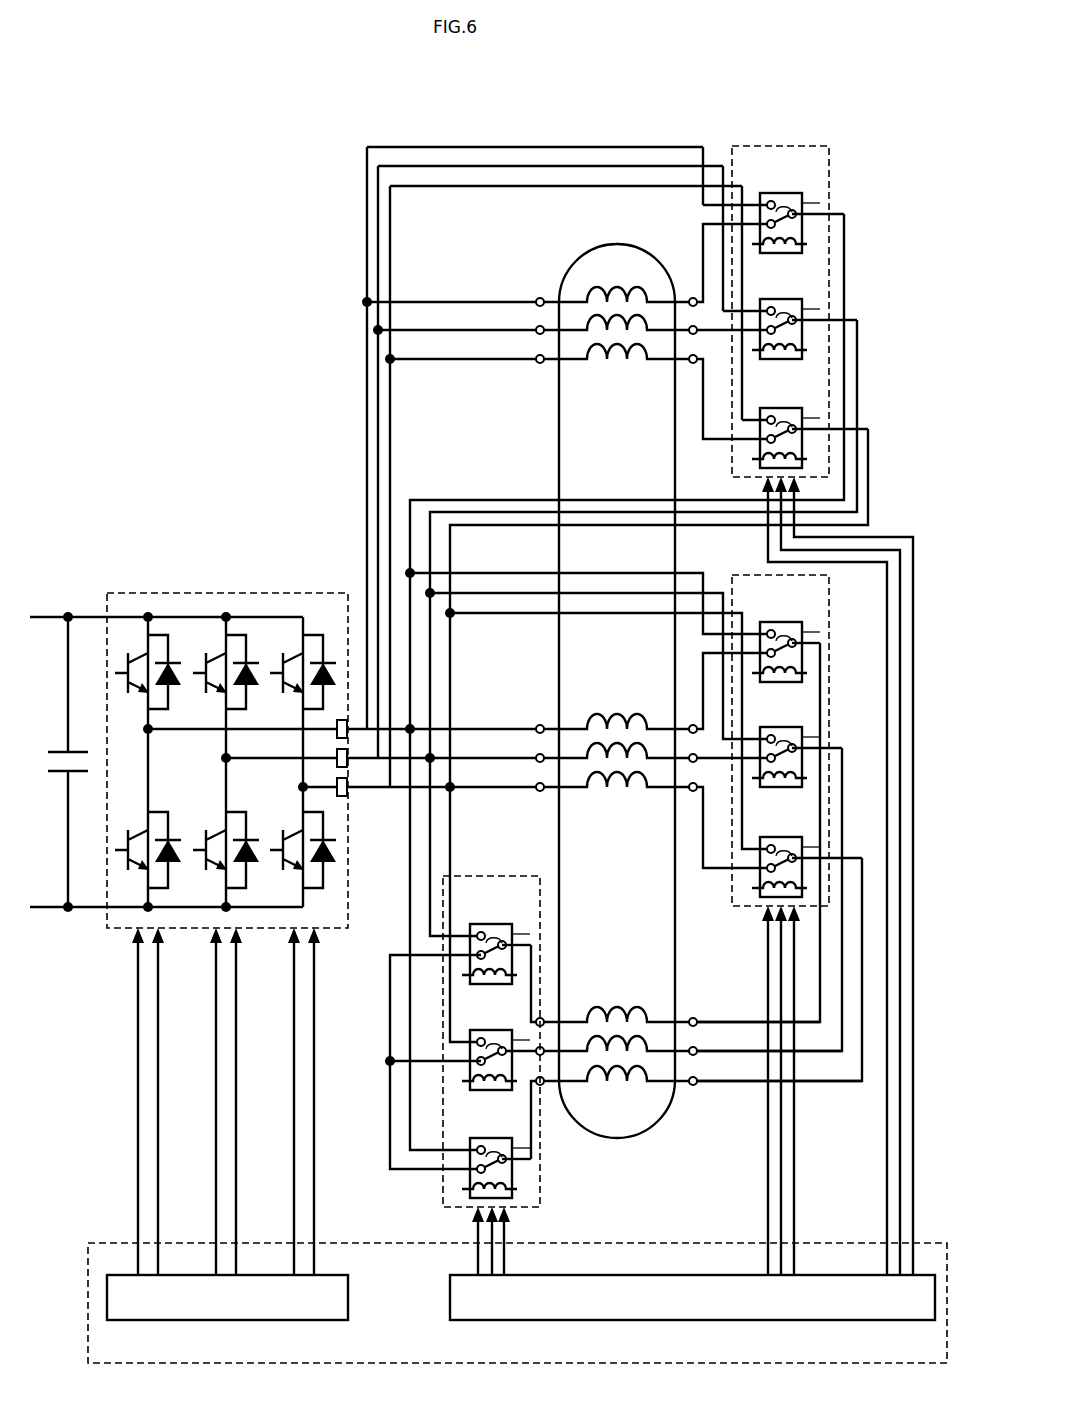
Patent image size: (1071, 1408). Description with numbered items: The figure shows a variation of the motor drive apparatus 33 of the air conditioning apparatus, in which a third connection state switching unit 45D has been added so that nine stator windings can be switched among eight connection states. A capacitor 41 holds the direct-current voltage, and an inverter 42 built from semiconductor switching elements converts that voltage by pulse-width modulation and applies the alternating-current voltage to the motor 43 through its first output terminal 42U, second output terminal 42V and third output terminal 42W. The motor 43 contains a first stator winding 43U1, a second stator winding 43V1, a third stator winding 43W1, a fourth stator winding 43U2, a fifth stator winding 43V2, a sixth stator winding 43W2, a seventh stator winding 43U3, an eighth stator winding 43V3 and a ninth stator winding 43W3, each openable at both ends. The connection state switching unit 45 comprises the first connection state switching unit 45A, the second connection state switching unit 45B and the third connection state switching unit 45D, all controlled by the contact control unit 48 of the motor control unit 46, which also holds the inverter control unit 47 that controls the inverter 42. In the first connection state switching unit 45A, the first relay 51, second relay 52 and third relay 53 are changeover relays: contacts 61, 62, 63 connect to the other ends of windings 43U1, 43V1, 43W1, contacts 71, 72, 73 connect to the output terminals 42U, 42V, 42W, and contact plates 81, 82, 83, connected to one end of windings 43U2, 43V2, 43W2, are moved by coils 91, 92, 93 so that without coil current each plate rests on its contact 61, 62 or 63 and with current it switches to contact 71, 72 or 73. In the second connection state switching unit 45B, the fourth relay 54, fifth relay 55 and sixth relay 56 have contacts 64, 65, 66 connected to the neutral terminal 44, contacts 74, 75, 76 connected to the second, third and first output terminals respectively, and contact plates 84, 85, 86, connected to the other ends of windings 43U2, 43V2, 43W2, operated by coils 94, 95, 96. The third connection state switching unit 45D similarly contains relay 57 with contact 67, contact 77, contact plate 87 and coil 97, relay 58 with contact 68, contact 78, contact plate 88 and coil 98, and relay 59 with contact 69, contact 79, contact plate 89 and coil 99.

The motor drive apparatus 33 is at (553, 90).
The capacitor 41 is at (54, 752).
The inverter 42 is at (186, 592).
The first output terminal 42U is at (336, 730).
The second output terminal 42V is at (336, 758).
The third output terminal 42W is at (336, 786).
The motor 43 is at (613, 243).
The first stator winding 43U1 is at (573, 727).
The second stator winding 43V1 is at (573, 757).
The third stator winding 43W1 is at (576, 790).
The fourth stator winding 43U2 is at (657, 1017).
The fifth stator winding 43V2 is at (663, 1055).
The sixth stator winding 43W2 is at (578, 1084).
The seventh stator winding 43U3 is at (572, 300).
The eighth stator winding 43V3 is at (573, 330).
The ninth stator winding 43W3 is at (574, 362).
The neutral terminal 44 is at (387, 1061).
The connection state switching unit 45 is at (240, 392).
The first connection state switching unit 45A is at (750, 575).
The second connection state switching unit 45B is at (477, 876).
The third connection state switching unit 45D is at (733, 424).
The motor control unit 46 is at (672, 1245).
The inverter control unit 47 is at (324, 1275).
The contact control unit 48 is at (709, 1275).
The first relay 51 is at (785, 606).
The second relay 52 is at (785, 714).
The third relay 53 is at (785, 823).
The fourth relay 54 is at (497, 909).
The fifth relay 55 is at (497, 1015).
The sixth relay 56 is at (497, 1123).
The relay 57 is at (785, 181).
The relay 58 is at (785, 288).
The relay 59 is at (785, 396).
The contact 61 is at (760, 651).
The contact 62 is at (760, 760).
The contact 63 is at (760, 868).
The contact 64 is at (468, 953).
The contact 65 is at (473, 1056).
The contact 66 is at (470, 1169).
The contact 67 is at (760, 222).
The contact 68 is at (760, 332).
The contact 69 is at (760, 440).
The contact 71 is at (769, 631).
The contact 72 is at (769, 737).
The contact 73 is at (769, 846).
The contact 74 is at (478, 934).
The contact 75 is at (478, 1040).
The contact 76 is at (478, 1148).
The contact 77 is at (769, 200).
The contact 78 is at (769, 307).
The contact 79 is at (769, 417).
The contact plate 81 is at (803, 632).
The contact plate 82 is at (803, 739).
The contact plate 83 is at (803, 847).
The contact plate 84 is at (528, 935).
The contact plate 85 is at (522, 1050).
The contact plate 86 is at (520, 1158).
The contact plate 87 is at (803, 203).
The contact plate 88 is at (803, 309).
The contact plate 89 is at (802, 417).
The coil 91 is at (805, 669).
The coil 92 is at (806, 776).
The coil 93 is at (757, 888).
The coil 94 is at (517, 970).
The coil 95 is at (468, 1071).
The coil 96 is at (517, 1189).
The coil 97 is at (805, 239).
The coil 98 is at (805, 347).
The coil 99 is at (752, 459).